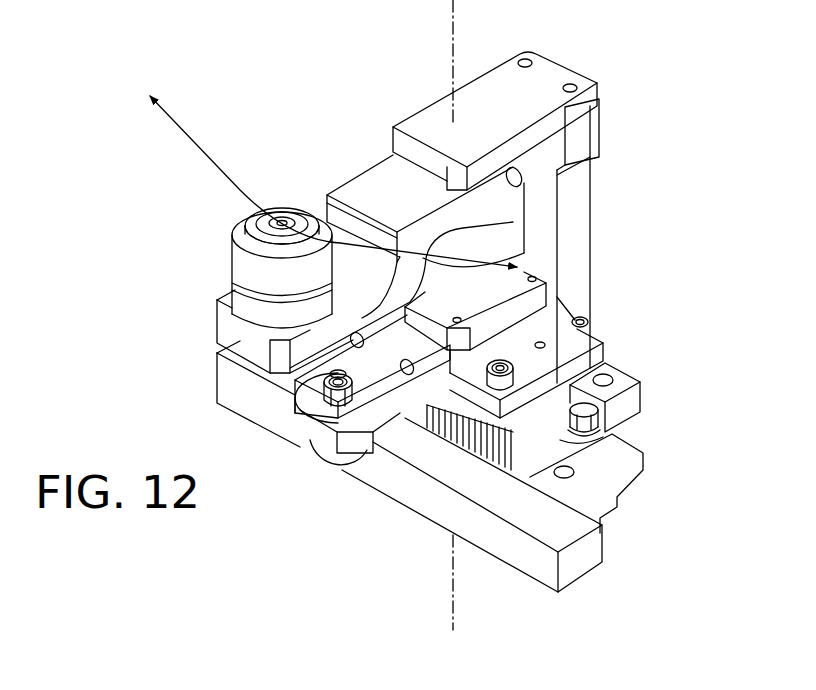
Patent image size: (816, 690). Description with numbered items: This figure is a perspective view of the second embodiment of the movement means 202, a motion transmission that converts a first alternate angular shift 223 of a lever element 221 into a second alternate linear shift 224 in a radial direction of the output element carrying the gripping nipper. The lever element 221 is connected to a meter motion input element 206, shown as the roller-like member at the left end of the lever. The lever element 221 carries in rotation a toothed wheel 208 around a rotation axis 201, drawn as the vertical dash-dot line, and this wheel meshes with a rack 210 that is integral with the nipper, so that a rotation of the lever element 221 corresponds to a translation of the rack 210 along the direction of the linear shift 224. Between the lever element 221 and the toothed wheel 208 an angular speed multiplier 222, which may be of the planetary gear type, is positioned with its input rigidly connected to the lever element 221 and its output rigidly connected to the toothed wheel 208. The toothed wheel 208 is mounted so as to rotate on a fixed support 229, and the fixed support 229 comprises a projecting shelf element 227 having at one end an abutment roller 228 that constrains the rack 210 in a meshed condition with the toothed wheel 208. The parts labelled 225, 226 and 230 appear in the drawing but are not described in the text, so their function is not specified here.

The rotation axis 201 is at (455, 45).
The movement means 202 is at (303, 147).
The meter motion input element 206 is at (232, 263).
The toothed wheel 208 is at (458, 450).
The rack 210 is at (253, 401).
The lever element 221 is at (377, 182).
The angular speed multiplier 222 is at (560, 210).
The first alternate angular shift 223 is at (237, 205).
The second alternate linear shift 224 is at (572, 625).
The vertical frame 225 is at (575, 260).
The bolt block 226 is at (578, 442).
The projecting shelf element 227 is at (312, 424).
The abutment roller 228 is at (340, 460).
The fixed support 229 is at (627, 485).
The top plate 230 is at (553, 73).